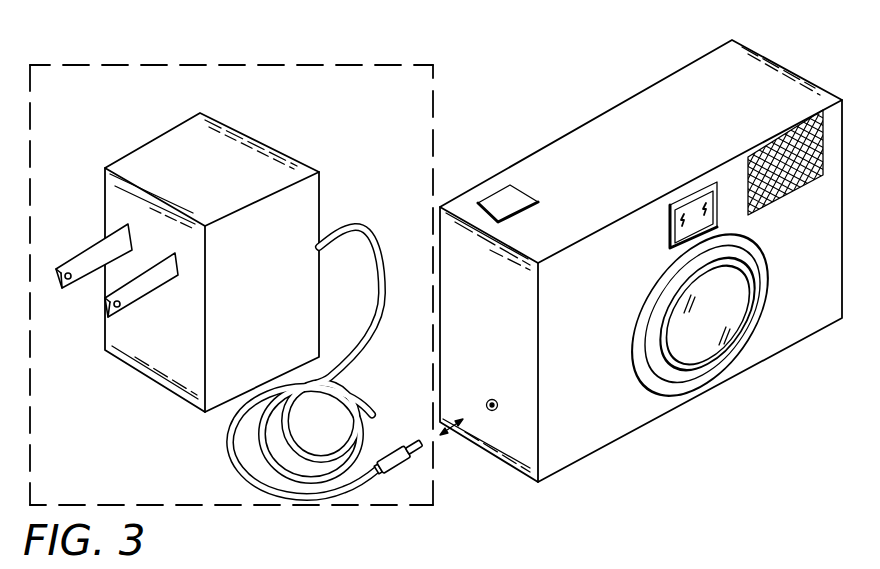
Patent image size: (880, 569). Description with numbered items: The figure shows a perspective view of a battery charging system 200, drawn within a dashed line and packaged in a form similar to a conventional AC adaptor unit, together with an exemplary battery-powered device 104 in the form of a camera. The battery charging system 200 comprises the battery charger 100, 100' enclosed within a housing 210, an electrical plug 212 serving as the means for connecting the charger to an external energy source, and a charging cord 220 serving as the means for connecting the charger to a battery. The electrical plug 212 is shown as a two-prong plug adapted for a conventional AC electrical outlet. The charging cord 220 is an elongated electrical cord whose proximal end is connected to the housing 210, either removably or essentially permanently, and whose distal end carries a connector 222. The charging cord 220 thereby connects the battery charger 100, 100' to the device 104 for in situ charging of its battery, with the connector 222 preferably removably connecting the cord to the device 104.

The battery charging system 200 is at (232, 62).
The battery charger 100 is at (198, 245).
The battery charger 100' is at (198, 245).
The housing 210 is at (138, 165).
The electrical plug 212 is at (84, 305).
The charging cord 220 is at (352, 208).
The connector 222 is at (395, 472).
The battery-powered device 104 is at (678, 75).